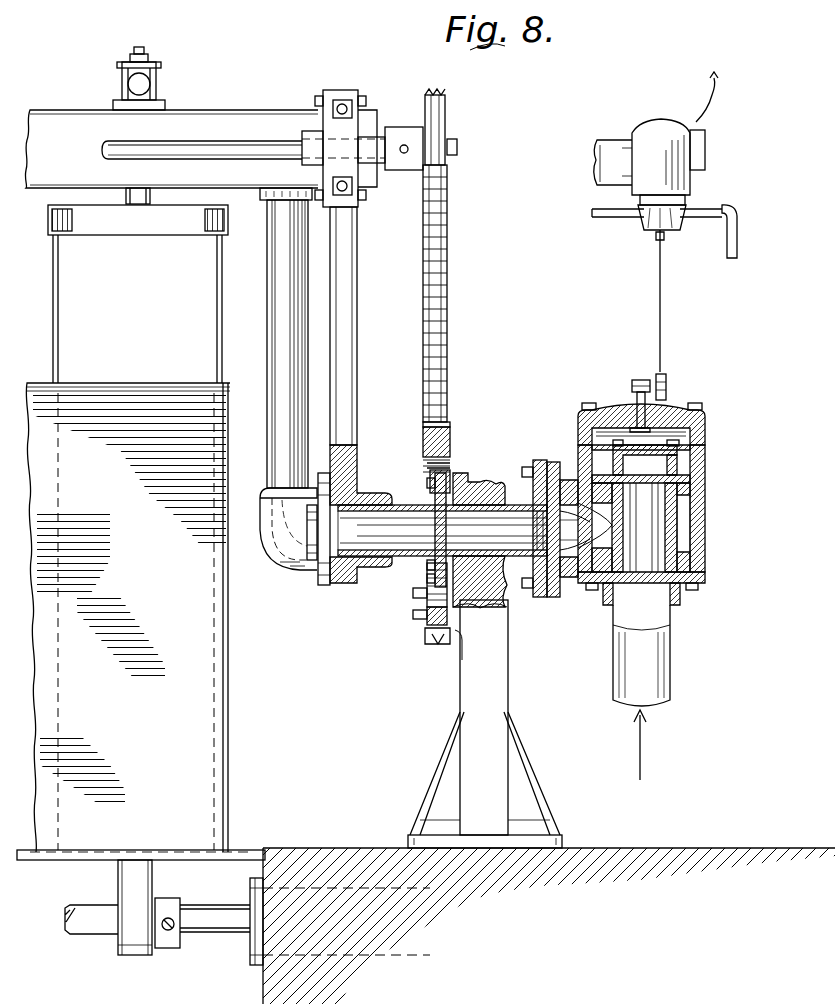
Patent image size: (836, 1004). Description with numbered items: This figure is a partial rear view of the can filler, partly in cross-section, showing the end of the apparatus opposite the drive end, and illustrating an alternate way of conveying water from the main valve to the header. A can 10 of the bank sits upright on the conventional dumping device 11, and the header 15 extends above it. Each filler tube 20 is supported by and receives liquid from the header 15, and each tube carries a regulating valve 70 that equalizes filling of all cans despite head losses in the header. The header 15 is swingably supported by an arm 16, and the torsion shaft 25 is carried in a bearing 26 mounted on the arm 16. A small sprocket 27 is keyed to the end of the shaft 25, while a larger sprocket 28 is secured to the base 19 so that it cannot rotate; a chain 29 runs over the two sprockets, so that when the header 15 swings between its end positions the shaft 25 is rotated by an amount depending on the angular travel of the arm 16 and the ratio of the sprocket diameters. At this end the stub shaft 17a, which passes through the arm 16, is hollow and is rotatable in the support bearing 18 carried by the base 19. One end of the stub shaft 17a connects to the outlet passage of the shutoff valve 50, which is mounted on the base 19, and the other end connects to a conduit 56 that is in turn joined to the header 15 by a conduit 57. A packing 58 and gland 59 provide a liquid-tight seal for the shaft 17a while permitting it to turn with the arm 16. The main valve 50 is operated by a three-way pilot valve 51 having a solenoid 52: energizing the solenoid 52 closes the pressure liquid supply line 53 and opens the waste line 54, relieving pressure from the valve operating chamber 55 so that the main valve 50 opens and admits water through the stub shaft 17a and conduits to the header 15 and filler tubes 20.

The can 10 is at (152, 292).
The dumping device 11 is at (190, 698).
The header 15 is at (68, 118).
The arm 16 is at (343, 314).
The stub shaft 17a is at (512, 523).
The bearing 18 is at (508, 587).
The base 19 is at (470, 692).
The filler tube 20 is at (135, 190).
The torsion shaft 25 is at (222, 148).
The bearing 26 is at (352, 124).
The small sprocket 27 is at (447, 110).
The larger sprocket 28 is at (432, 626).
The chain 29 is at (445, 247).
The shutoff valve 50 is at (694, 523).
The three-way pilot valve 51 is at (672, 222).
The solenoid 52 is at (680, 172).
The pressure liquid supply line 53 is at (606, 220).
The waste line 54 is at (734, 248).
The valve operating chamber 55 is at (680, 412).
The conduit 56 is at (290, 572).
The conduit 57 is at (282, 312).
The packing 58 is at (472, 458).
The gland 59 is at (425, 570).
The regulating valve 70 is at (170, 89).